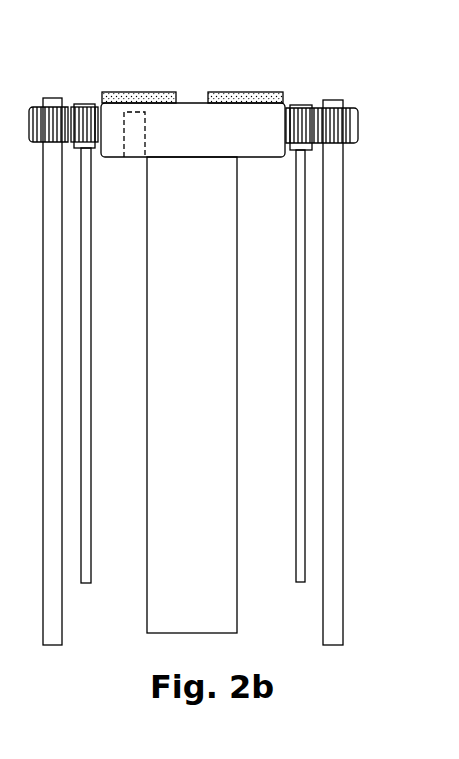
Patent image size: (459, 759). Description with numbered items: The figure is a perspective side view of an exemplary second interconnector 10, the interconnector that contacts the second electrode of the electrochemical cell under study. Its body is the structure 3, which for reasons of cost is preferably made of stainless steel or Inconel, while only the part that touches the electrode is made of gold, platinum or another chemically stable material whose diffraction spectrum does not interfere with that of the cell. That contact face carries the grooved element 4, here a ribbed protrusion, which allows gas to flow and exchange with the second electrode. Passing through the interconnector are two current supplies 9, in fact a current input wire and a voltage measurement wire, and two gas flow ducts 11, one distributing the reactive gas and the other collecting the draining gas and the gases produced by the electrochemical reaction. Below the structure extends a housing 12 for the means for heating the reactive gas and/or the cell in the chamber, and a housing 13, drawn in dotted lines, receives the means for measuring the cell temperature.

The structure 3 is at (255, 135).
The grooved element 4 is at (243, 92).
The current supplies 9 is at (295, 572).
The second interconnector 10 is at (358, 177).
The gas flow ducts 11 is at (328, 612).
The housing 12 is at (198, 542).
The housing 13 is at (135, 158).